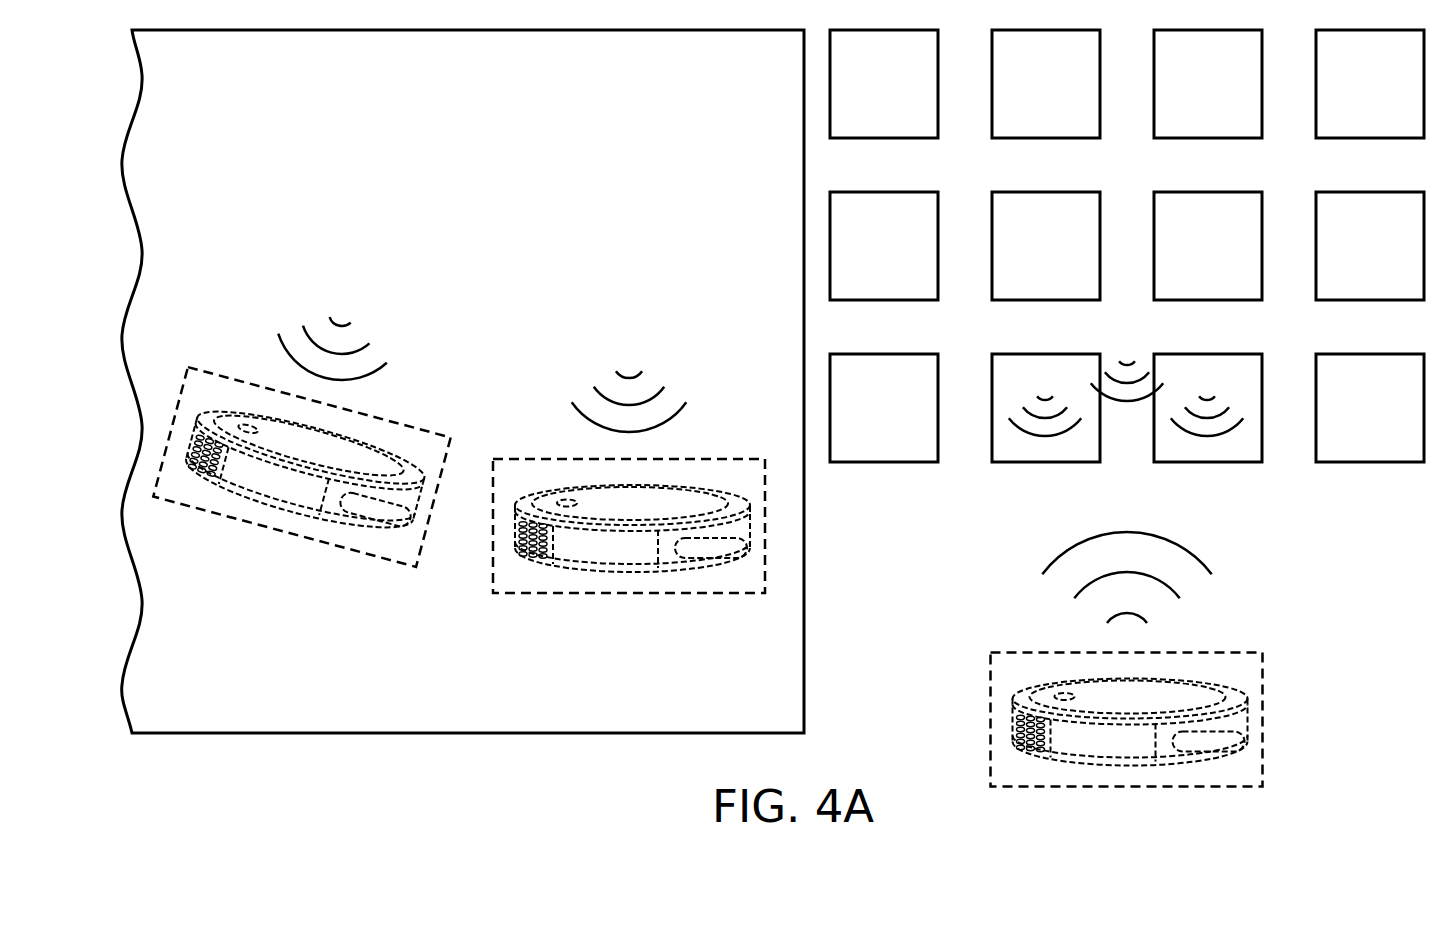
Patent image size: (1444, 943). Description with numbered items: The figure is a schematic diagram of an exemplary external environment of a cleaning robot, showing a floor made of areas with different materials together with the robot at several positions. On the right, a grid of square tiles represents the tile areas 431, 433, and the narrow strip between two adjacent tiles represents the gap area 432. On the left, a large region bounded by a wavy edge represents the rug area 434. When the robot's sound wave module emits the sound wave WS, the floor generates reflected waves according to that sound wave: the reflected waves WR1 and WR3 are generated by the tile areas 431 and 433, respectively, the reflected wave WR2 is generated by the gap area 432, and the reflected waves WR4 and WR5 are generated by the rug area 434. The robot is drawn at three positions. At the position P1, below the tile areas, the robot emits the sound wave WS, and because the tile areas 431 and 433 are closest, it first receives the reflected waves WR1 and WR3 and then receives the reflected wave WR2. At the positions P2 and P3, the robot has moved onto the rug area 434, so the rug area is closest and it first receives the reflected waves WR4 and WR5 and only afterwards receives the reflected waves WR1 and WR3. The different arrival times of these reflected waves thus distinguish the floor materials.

The rug area 434 is at (746, 100).
The tile area 433 is at (1022, 354).
The gap area 432 is at (1154, 466).
The tile area 431 is at (1232, 354).
The position P1 is at (1263, 719).
The position P2 is at (627, 595).
The position P3 is at (288, 536).
The reflected wave WR1 is at (1207, 399).
The reflected wave WR2 is at (1127, 359).
The reflected wave WR3 is at (1045, 399).
The reflected wave WR4 is at (652, 392).
The reflected wave WR5 is at (352, 348).
The sound wave WS is at (1122, 585).